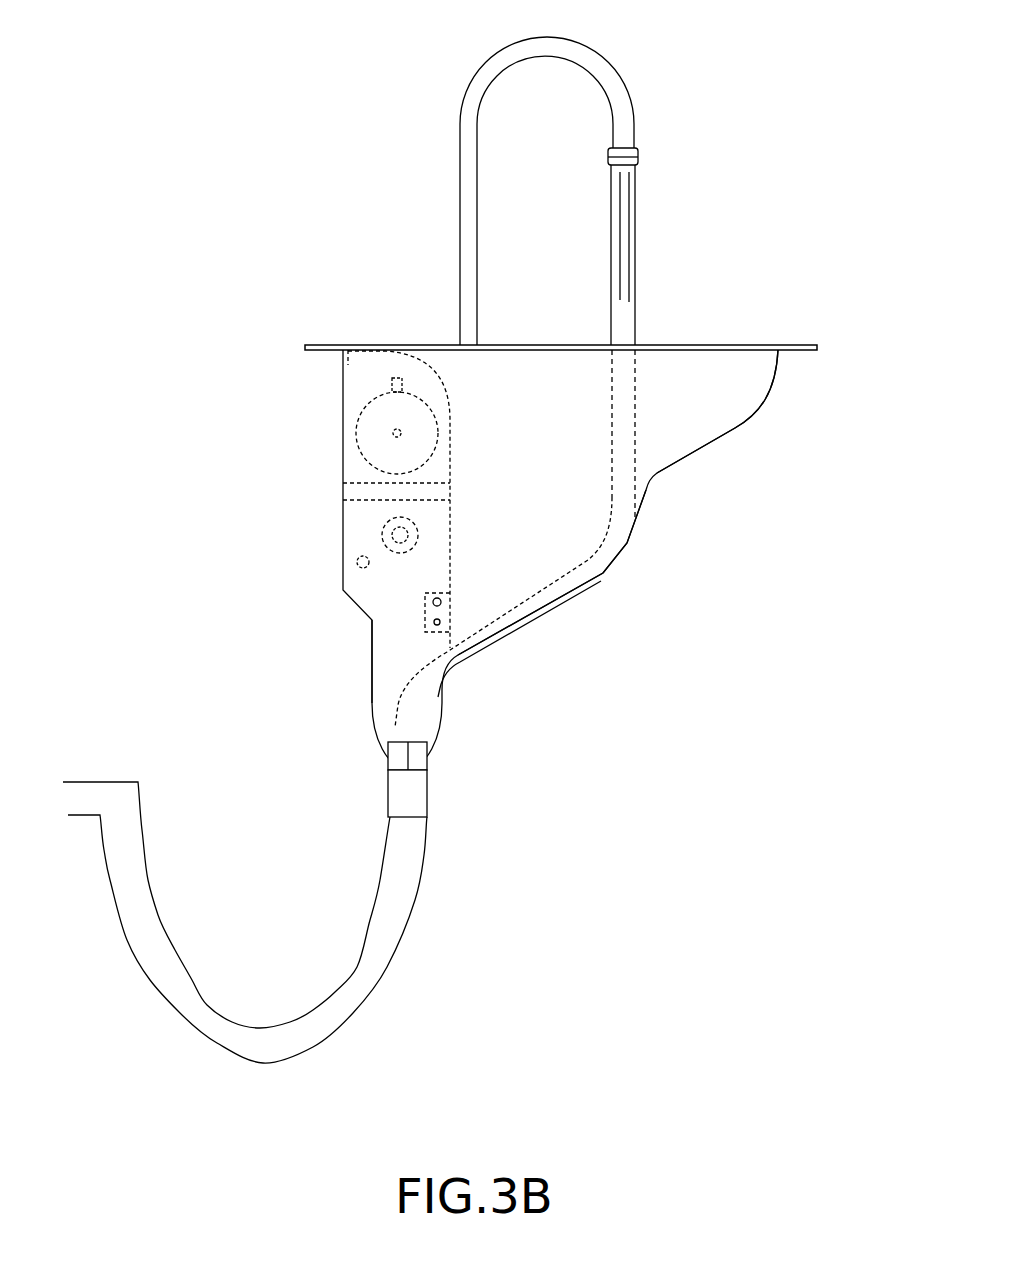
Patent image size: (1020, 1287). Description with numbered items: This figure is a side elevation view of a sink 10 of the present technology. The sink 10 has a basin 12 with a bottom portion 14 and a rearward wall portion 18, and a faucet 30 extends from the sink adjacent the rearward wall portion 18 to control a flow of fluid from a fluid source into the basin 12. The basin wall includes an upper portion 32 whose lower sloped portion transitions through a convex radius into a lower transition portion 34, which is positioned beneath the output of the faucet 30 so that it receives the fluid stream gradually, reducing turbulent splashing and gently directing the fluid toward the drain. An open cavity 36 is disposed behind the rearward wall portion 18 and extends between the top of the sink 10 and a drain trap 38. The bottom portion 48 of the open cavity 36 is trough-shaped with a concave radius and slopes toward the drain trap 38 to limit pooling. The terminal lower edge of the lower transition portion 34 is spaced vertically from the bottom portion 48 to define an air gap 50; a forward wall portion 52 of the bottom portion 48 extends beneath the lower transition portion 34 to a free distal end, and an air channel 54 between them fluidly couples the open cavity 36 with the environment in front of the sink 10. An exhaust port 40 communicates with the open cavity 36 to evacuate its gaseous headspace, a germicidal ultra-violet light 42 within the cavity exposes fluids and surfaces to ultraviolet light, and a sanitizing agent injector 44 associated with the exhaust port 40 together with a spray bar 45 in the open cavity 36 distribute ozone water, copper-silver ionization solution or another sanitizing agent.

The sink 10 is at (776, 214).
The basin 12 is at (736, 366).
The bottom portion 14 is at (503, 596).
The rearward wall portion 18 is at (458, 521).
The faucet 30 is at (614, 82).
The upper portion 32 is at (735, 428).
The lower transition portion 34 is at (627, 543).
The open cavity 36 is at (406, 606).
The drain trap 38 is at (422, 793).
The exhaust port 40 is at (358, 428).
The germicidal ultra-violet light 42 is at (396, 535).
The sanitizing agent injector 44 is at (390, 384).
The spray bar 45 is at (357, 563).
The bottom portion of the open cavity 48 is at (376, 697).
The air gap 50 is at (434, 715).
The forward wall portion 52 is at (543, 613).
The air channel 54 is at (622, 575).